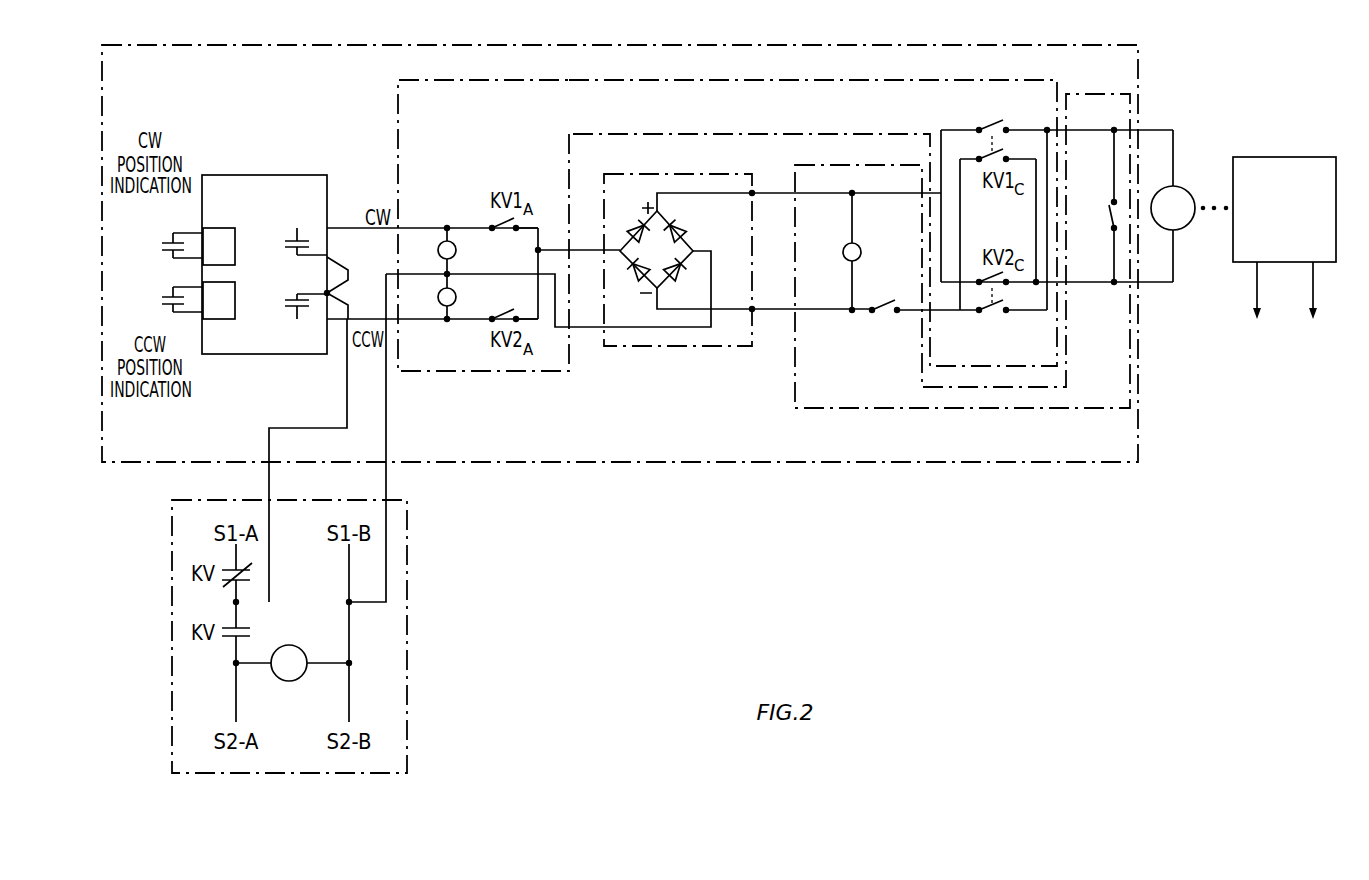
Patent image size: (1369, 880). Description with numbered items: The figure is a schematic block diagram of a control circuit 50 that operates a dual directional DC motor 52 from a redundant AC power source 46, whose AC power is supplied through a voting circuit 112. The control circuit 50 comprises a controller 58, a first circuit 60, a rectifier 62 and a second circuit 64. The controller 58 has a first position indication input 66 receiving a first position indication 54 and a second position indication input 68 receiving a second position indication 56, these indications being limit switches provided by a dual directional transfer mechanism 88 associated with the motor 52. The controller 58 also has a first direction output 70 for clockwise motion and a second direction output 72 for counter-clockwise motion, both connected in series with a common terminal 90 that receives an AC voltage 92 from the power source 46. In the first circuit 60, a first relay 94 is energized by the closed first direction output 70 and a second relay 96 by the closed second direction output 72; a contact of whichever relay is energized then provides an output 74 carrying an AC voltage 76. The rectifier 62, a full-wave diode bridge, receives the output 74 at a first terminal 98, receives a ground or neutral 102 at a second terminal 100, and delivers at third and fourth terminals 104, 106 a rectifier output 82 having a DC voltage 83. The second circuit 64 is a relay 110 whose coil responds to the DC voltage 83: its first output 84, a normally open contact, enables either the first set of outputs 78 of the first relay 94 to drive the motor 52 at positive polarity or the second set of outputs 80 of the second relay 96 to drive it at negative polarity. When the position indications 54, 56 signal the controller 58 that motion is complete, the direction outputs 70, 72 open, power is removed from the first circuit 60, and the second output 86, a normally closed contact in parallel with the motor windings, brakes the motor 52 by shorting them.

The AC power source 46 is at (407, 703).
The control circuit 50 is at (620, 464).
The dual directional DC motor 52 is at (1190, 189).
The first position indication 54 is at (166, 238).
The second position indication 56 is at (166, 292).
The controller 58 is at (293, 175).
The first circuit 60 is at (462, 372).
The rectifier 62 is at (680, 347).
The second circuit 64 is at (858, 410).
The first position indication input 66 is at (235, 258).
The second position indication input 68 is at (235, 288).
The first direction output 70 is at (291, 240).
The second direction output 72 is at (292, 309).
The output 74 is at (544, 246).
The AC voltage 76 is at (584, 246).
The first set of outputs 78 is at (975, 112).
The second set of outputs 80 is at (974, 328).
The rectifier output 82 is at (755, 197).
The DC voltage 83 is at (771, 191).
The first output 84 is at (864, 339).
The second output 86 is at (1105, 236).
The dual directional transfer mechanism 88 is at (1303, 156).
The common terminal 90 is at (332, 292).
The AC voltage 92 is at (293, 428).
The first relay 94 is at (462, 252).
The second relay 96 is at (462, 297).
The first terminal 98 is at (620, 240).
The second terminal 100 is at (695, 250).
The ground or neutral 102 is at (352, 606).
The third terminal 104 is at (661, 211).
The fourth terminal 106 is at (661, 291).
The relay 110 is at (864, 245).
The voting circuit 112 is at (292, 682).